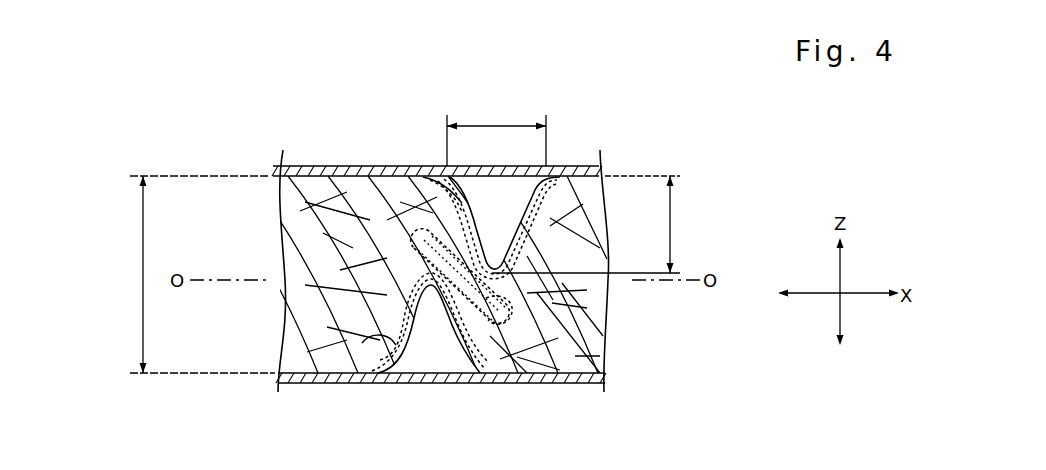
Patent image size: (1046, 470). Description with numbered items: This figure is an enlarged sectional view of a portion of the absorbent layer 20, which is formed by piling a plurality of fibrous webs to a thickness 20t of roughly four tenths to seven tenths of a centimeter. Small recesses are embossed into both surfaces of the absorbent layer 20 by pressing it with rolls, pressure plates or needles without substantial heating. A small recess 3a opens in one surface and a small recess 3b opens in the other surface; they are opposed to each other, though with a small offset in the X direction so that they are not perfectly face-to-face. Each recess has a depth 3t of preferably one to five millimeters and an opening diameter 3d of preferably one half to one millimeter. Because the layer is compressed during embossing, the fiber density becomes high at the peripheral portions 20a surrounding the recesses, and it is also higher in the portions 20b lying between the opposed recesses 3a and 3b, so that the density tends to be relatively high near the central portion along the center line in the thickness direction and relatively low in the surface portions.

The absorbent layer 20 is at (322, 195).
The peripheral portions of the small recesses 20a is at (430, 178).
The portions between the opposed small recesses 20b is at (487, 323).
The small recesses in one surface 3a is at (561, 167).
The small recesses in the other surface 3b is at (432, 350).
The opening diameter 3d is at (496, 131).
The depth of the small recesses 3t is at (598, 224).
The thickness of the absorbent layer 20t is at (187, 274).